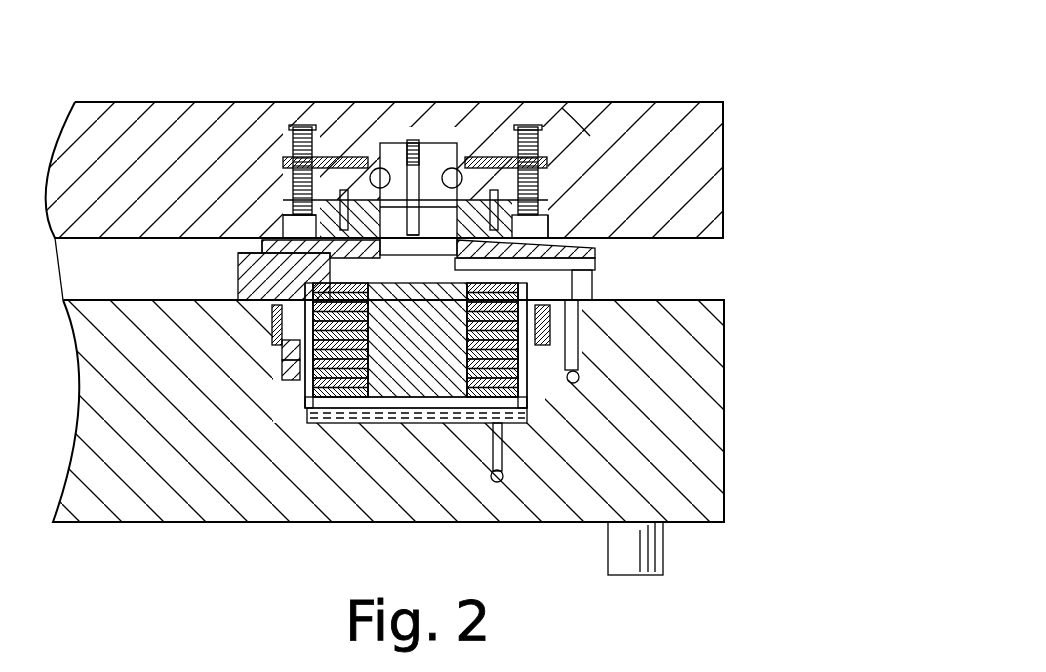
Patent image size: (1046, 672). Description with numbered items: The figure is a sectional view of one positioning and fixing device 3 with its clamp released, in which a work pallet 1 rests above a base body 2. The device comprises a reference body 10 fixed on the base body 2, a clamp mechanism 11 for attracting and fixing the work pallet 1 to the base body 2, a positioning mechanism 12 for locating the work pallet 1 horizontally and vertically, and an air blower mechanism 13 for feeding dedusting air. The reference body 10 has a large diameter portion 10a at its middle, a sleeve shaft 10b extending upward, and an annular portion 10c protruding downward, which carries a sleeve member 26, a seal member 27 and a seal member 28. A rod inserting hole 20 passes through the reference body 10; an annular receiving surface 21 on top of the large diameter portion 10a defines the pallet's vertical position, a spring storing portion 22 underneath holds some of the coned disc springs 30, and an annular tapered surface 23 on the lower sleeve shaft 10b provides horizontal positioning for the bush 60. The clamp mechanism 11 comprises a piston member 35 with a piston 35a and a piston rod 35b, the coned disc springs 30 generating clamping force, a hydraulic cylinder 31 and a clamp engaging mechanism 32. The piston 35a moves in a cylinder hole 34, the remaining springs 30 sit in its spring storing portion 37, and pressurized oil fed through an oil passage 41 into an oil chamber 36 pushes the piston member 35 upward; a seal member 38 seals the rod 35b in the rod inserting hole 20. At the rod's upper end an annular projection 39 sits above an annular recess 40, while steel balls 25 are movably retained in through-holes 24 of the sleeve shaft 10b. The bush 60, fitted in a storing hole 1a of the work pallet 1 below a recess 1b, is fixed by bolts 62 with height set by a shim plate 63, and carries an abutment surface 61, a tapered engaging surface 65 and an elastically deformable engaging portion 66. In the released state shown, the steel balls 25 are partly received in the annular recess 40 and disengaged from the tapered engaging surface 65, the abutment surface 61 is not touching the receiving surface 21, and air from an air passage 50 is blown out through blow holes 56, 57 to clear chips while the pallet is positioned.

The work pallet 1 is at (718, 148).
The storing hole 1a is at (591, 126).
The recess 1b is at (355, 128).
The base body 2 is at (682, 524).
The positioning and fixing device 3 is at (680, 42).
The reference body 10 is at (568, 261).
The large diameter portion 10a is at (597, 264).
The sleeve shaft 10b is at (560, 240).
The annular portion 10c is at (600, 290).
The clamp mechanism 11 is at (352, 456).
The positioning mechanism 12 is at (545, 128).
The air blower mechanism 13 is at (612, 395).
The rod inserting hole 20 is at (415, 256).
The receiving surface 21 is at (248, 240).
The spring storing portion 22 is at (272, 318).
The annular tapered surface 23 is at (283, 207).
The through-holes 24 is at (512, 128).
The steel balls 25 is at (388, 290).
The sleeve member 26 is at (270, 348).
The seal member 27 is at (290, 362).
The seal member 28 is at (303, 405).
The coned disc springs 30 is at (478, 425).
The hydraulic cylinder 31 is at (442, 445).
The clamp engaging mechanism 32 is at (472, 135).
The cylinder hole 34 is at (303, 422).
The piston member 35 is at (698, 374).
The piston 35a is at (560, 355).
The piston rod 35b is at (578, 338).
The oil chamber 36 is at (391, 425).
The spring storing portion 37 is at (525, 420).
The seal member 38 is at (280, 216).
The annular projection 39 is at (378, 143).
The annular recess 40 is at (410, 138).
The oil passage 41 is at (504, 480).
The air passage 50 is at (580, 390).
The blow hole 56 is at (430, 340).
The blow hole 57 is at (293, 130).
The bush 60 is at (262, 159).
The abutment surface 61 is at (262, 273).
The bolts 62 is at (582, 128).
The shim plate 63 is at (490, 128).
The tapered engaging surface 65 is at (448, 135).
The engaging portion 66 is at (566, 216).